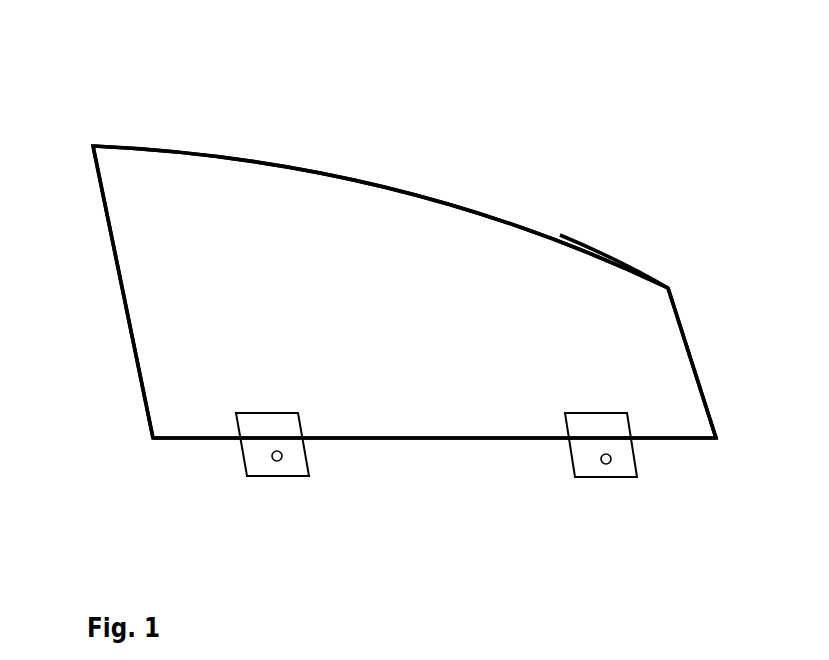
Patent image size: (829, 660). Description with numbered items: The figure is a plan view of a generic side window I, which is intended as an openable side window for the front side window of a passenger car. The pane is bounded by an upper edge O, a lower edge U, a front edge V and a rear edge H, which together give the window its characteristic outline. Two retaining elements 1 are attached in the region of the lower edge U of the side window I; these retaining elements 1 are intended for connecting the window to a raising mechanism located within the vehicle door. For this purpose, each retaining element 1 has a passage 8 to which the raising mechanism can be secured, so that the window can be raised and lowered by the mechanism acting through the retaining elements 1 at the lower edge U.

The retaining element 1 is at (257, 446).
The passage 8 is at (281, 461).
The upper edge of the side window O is at (380, 152).
The side window I is at (648, 298).
The rear edge of the side window H is at (98, 284).
The front edge of the side window V is at (716, 341).
The lower edge of the side window U is at (445, 462).